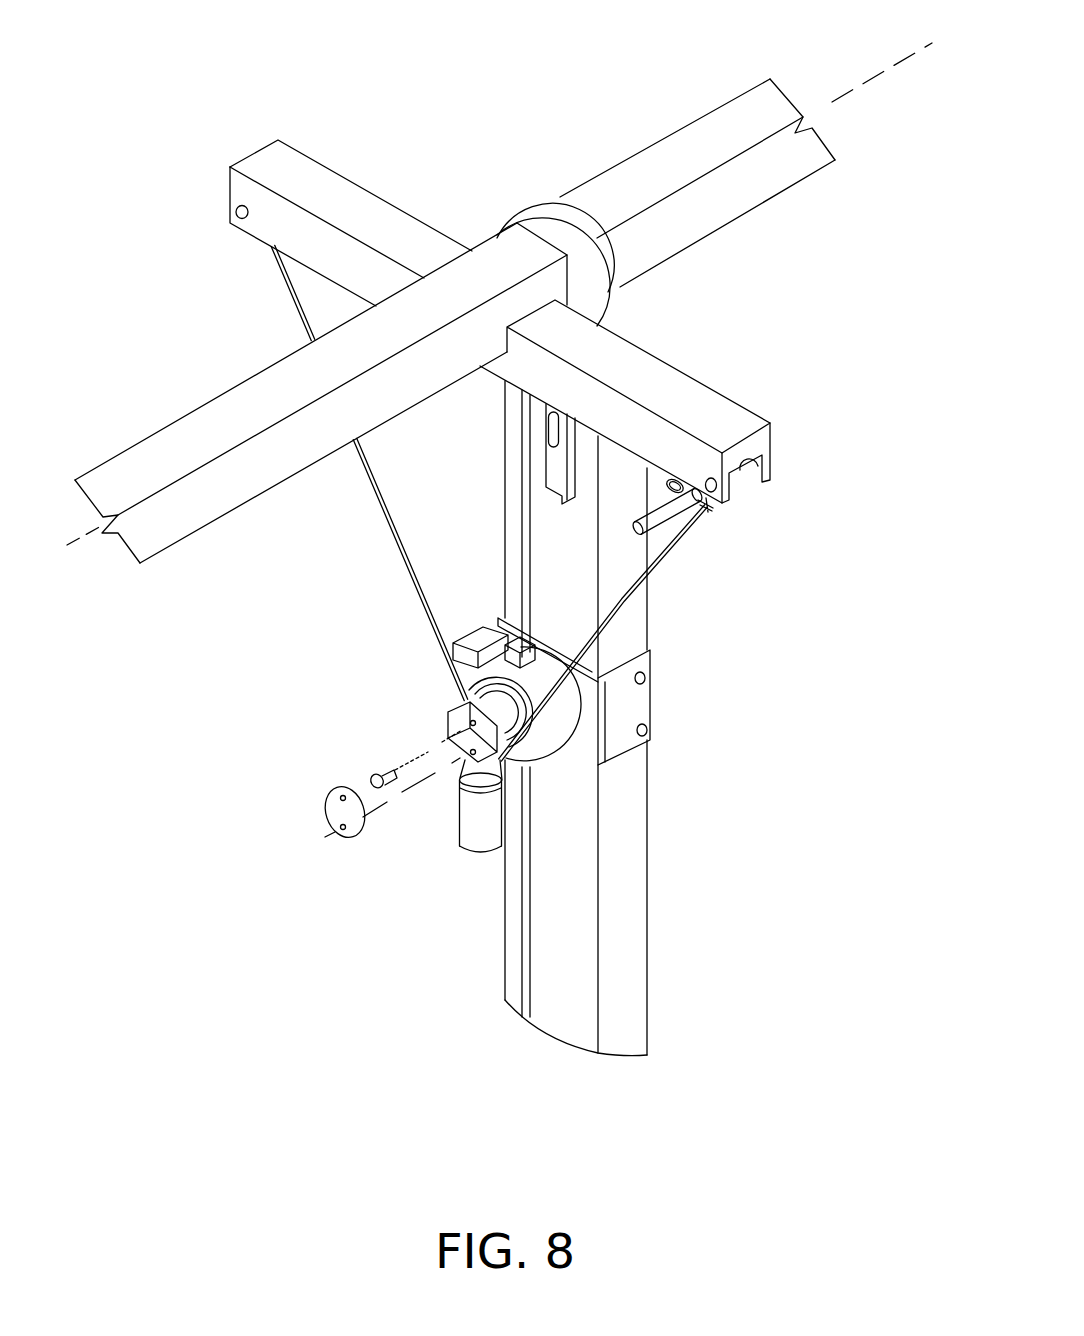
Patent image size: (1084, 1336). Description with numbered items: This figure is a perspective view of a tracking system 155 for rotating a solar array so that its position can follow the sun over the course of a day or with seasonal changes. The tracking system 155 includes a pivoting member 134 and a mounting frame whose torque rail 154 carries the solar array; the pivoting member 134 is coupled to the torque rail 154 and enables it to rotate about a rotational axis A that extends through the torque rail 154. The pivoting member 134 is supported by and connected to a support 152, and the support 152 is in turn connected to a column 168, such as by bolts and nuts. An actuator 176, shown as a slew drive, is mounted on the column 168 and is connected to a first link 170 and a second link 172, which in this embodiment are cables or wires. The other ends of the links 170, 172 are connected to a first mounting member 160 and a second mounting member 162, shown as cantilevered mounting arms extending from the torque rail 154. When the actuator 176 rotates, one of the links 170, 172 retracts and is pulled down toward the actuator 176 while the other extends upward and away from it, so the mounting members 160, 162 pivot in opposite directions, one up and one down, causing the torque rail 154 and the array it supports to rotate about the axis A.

The pivoting member 134 is at (557, 210).
The support 152 is at (566, 464).
The torque rail 154 is at (422, 192).
The tracking system 155 is at (780, 893).
The first mounting member 160 is at (295, 232).
The second mounting member 162 is at (618, 362).
The column 168 is at (580, 922).
The first link 170 is at (394, 538).
The second link 172 is at (660, 568).
The actuator 176 is at (560, 718).
The rotational axis A is at (858, 86).